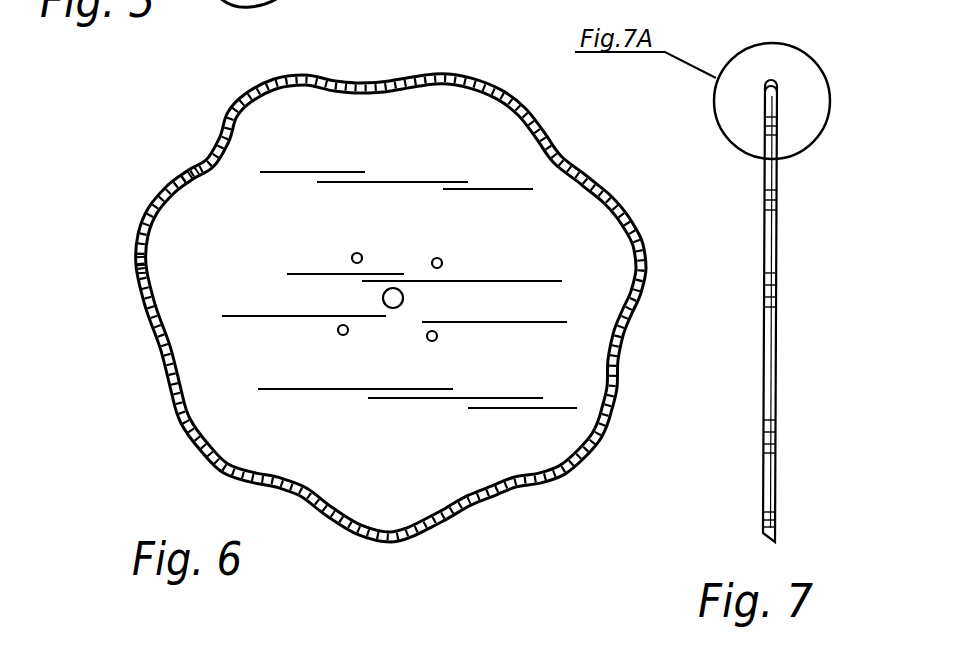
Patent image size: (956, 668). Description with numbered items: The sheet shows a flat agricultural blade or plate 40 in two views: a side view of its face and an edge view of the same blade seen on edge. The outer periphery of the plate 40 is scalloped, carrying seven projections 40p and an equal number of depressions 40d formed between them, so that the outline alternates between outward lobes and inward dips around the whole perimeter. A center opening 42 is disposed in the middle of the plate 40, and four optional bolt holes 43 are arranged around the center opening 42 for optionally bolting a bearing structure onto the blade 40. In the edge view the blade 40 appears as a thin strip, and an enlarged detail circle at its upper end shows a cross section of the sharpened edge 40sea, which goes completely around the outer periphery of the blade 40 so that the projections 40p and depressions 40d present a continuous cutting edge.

In FIG. 6, the flat agricultural blade 40 is at (133, 409).
In FIG. 7, the flat agricultural blade 40 is at (776, 232).
In FIG. 6, the depressions 40d is at (197, 176).
In FIG. 6, the projections 40p is at (139, 268).
In FIG. 7, the sharpened edge 40sea is at (772, 82).
In FIG. 6, the center opening 42 is at (395, 290).
In FIG. 6, the bolt holes 43 is at (358, 253).